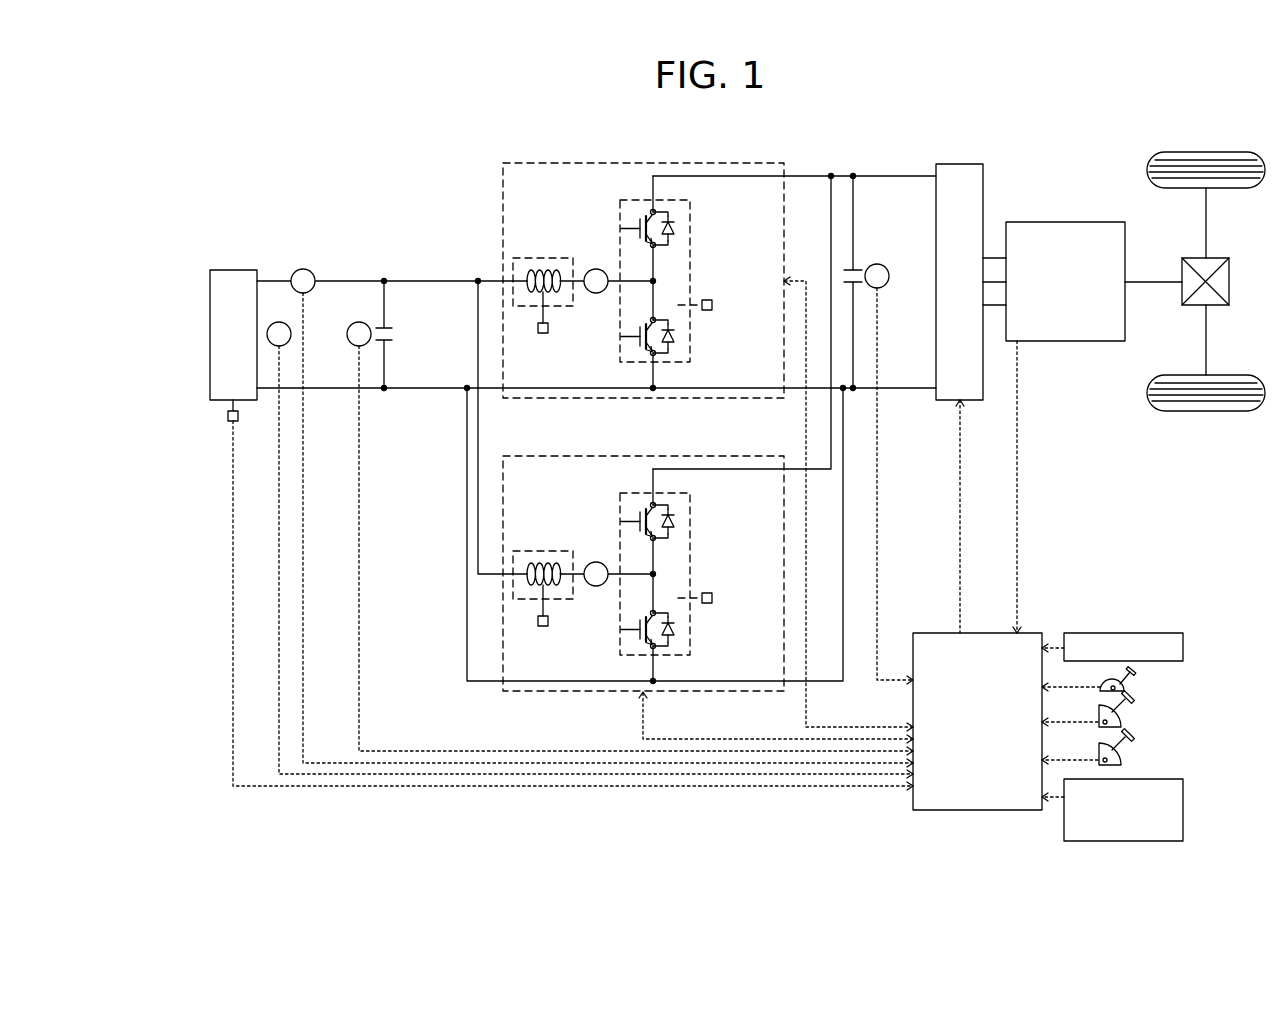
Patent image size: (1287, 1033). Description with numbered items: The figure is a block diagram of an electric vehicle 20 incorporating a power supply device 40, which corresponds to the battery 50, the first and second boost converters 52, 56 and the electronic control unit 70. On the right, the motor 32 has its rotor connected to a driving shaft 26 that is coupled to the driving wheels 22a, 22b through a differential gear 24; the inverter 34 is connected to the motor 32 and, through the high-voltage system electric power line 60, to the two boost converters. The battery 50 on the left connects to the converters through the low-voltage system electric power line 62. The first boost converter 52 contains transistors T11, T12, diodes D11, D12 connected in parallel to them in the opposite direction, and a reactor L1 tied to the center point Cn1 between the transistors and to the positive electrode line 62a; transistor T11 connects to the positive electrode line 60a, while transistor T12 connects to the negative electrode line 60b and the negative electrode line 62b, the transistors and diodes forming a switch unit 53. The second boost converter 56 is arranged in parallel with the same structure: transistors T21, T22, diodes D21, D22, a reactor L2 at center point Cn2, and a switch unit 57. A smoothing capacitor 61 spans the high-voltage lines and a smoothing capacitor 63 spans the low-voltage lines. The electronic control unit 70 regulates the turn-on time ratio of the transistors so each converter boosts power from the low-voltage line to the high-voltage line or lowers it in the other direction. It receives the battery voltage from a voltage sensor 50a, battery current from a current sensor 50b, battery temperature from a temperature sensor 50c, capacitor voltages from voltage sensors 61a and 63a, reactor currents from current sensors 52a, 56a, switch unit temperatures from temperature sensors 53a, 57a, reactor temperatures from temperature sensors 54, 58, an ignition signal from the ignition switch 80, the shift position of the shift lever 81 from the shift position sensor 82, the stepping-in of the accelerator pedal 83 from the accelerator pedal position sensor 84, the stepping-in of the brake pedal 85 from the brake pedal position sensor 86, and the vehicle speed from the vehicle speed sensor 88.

The electric vehicle 20 is at (1113, 127).
The driving wheel 22a is at (1204, 151).
The driving wheel 22b is at (1204, 413).
The differential gear 24 is at (1216, 257).
The driving shaft 26 is at (1158, 281).
The motor 32 is at (1065, 221).
The inverter 34 is at (960, 163).
The power supply device 40 is at (444, 163).
The battery 50 is at (232, 270).
The voltage sensor 50a is at (279, 322).
The current sensor 50b is at (305, 269).
The temperature sensor 50c is at (227, 416).
The first boost converter 52 is at (639, 162).
The current sensor 52a is at (596, 268).
The switch unit 53 is at (672, 199).
The temperature sensor 53a is at (714, 306).
The temperature sensor 54 is at (544, 334).
The second boost converter 56 is at (643, 550).
The current sensor 56a is at (595, 554).
The switch unit 57 is at (655, 538).
The temperature sensor 57a is at (727, 597).
The temperature sensor 58 is at (548, 630).
The high-voltage system electric power line 60 is at (794, 293).
The positive electrode line 60a is at (906, 178).
The negative electrode line 60b is at (906, 386).
The smoothing capacitor 61 is at (851, 266).
The voltage sensor 61a is at (877, 264).
The low-voltage system electric power line 62 is at (556, 453).
The positive electrode line 62a is at (443, 285).
The negative electrode line 62b is at (443, 386).
The smoothing capacitor 63 is at (389, 325).
The voltage sensor 63a is at (359, 322).
The electronic control unit 70 is at (984, 632).
The ignition switch 80 is at (1184, 648).
The shift lever 81 is at (1137, 673).
The shift position sensor 82 is at (1125, 691).
The accelerator pedal 83 is at (1135, 701).
The accelerator pedal position sensor 84 is at (1122, 724).
The brake pedal 85 is at (1135, 739).
The brake pedal position sensor 86 is at (1122, 762).
The vehicle speed sensor 88 is at (1184, 797).
The reactor L1 is at (542, 268).
The reactor L2 is at (543, 560).
The transistor T11 is at (621, 228).
The transistor T12 is at (621, 336).
The transistor T21 is at (618, 518).
The transistor T22 is at (618, 629).
The diode D11 is at (676, 232).
The diode D12 is at (676, 340).
The diode D21 is at (701, 523).
The diode D22 is at (701, 629).
The center point Cn1 is at (656, 281).
The center point Cn2 is at (698, 574).